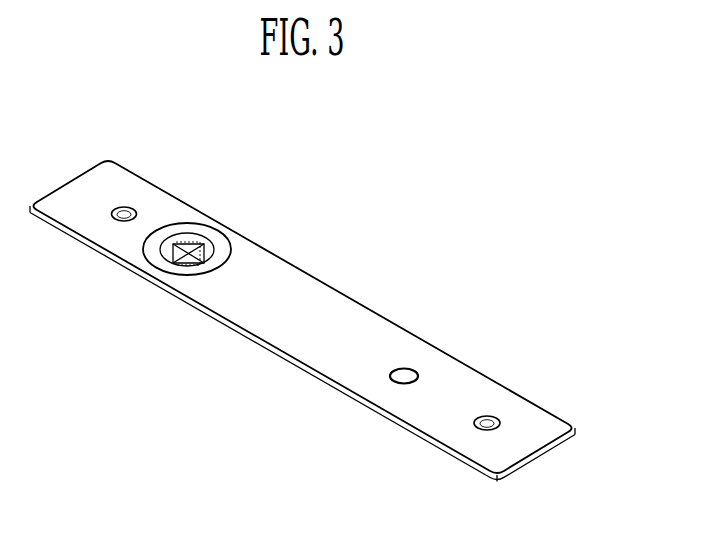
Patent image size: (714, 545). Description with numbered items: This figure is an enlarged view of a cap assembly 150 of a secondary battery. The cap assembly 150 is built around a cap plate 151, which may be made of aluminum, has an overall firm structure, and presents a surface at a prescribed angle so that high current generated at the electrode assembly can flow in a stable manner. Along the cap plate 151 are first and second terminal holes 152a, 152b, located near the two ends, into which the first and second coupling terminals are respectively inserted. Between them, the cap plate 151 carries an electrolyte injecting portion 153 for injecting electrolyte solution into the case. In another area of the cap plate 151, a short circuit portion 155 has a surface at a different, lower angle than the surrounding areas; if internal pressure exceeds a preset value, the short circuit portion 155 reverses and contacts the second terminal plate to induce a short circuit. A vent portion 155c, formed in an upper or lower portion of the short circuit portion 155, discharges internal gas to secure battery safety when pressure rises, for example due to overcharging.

The cap assembly 150 is at (418, 230).
The cap plate 151 is at (558, 428).
The first terminal hole 152a is at (488, 415).
The second terminal hole 152b is at (128, 212).
The electrolyte injecting portion 153 is at (403, 368).
The short circuit portion 155 is at (214, 226).
The vent portion 155c is at (165, 257).